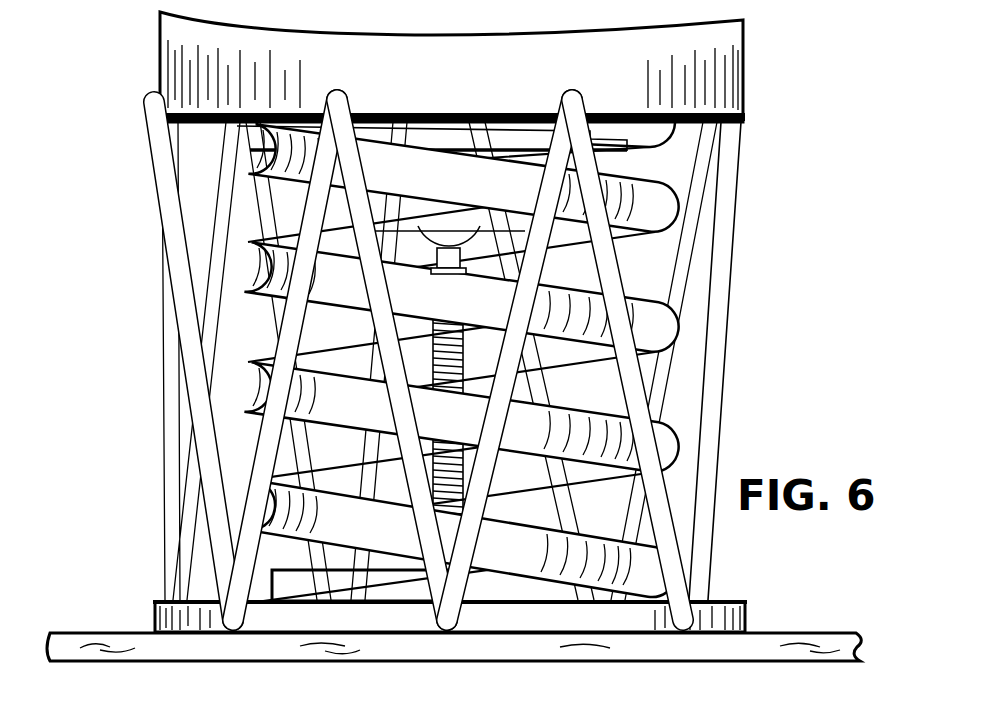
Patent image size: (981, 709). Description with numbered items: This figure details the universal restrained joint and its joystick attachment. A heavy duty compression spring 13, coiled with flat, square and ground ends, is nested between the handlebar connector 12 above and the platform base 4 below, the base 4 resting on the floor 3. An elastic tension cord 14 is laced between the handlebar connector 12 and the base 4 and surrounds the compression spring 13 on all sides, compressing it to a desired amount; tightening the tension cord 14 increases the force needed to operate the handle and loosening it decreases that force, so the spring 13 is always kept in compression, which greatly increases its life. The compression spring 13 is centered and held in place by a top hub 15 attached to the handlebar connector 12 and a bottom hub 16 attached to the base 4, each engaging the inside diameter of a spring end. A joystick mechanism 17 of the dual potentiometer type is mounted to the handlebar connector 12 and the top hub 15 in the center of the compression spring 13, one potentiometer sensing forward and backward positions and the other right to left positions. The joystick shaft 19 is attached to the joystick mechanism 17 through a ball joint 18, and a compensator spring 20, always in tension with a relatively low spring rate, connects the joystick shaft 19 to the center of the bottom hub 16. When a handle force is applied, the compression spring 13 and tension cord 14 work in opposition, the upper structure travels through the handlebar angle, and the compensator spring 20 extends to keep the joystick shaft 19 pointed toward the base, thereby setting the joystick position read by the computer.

The floor 3 is at (798, 658).
The platform base 4 is at (604, 629).
The handlebar connector 12 is at (630, 81).
The compression spring 13 is at (463, 307).
The elastic tension cord 14 is at (732, 247).
The top hub 15 is at (432, 138).
The bottom hub 16 is at (311, 598).
The joystick mechanism 17 is at (398, 228).
The ball joint 18 is at (449, 237).
The joystick shaft 19 is at (463, 253).
The compensator spring 20 is at (464, 375).